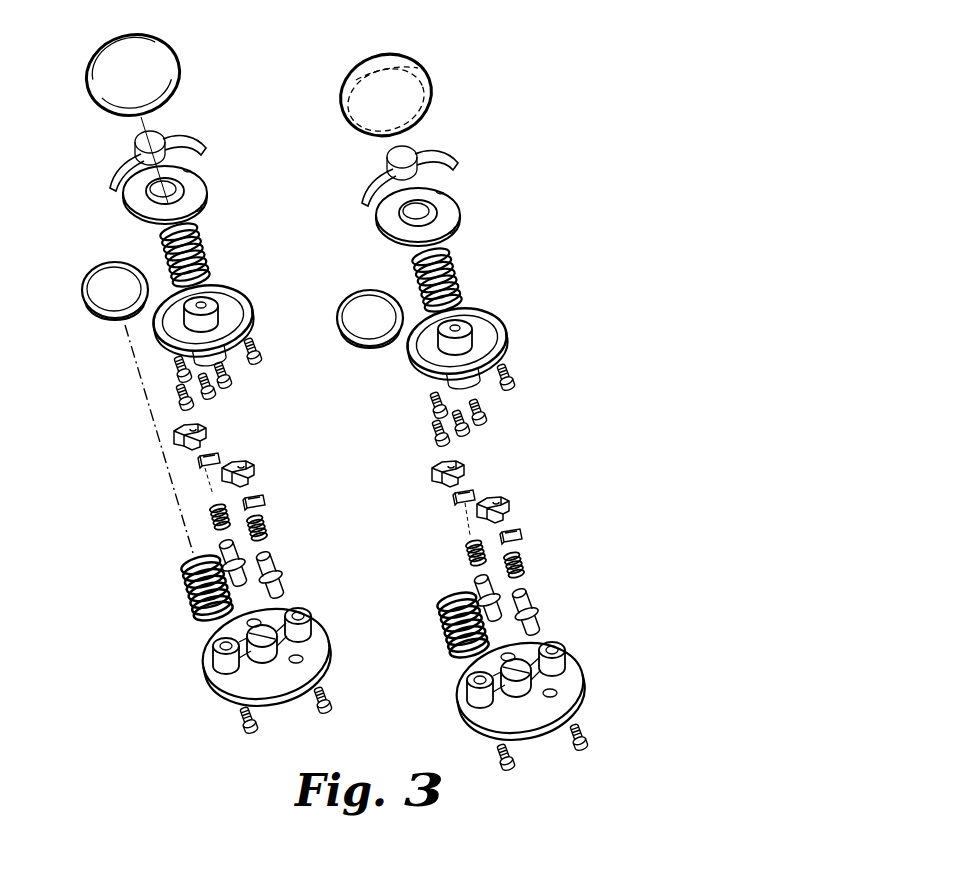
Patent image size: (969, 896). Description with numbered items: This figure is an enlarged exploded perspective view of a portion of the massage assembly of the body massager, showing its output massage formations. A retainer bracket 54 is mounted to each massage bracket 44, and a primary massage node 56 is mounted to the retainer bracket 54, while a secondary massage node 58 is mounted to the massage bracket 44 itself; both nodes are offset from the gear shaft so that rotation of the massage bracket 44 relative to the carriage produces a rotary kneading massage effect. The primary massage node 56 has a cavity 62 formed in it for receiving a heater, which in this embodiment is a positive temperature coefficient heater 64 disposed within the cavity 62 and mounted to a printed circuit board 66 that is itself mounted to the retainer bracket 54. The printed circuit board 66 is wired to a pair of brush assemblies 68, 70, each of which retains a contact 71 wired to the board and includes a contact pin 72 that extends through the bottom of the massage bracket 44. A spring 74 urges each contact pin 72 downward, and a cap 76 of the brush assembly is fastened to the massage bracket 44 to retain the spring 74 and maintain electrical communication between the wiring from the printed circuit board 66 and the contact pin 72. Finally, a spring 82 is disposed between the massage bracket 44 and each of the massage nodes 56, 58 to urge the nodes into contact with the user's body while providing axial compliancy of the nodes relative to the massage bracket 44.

The massage bracket 44 is at (588, 688).
The retainer bracket 54 is at (508, 336).
The primary massage node 56 is at (432, 92).
The secondary massage node 58 is at (365, 292).
The cavity 62 is at (397, 52).
The PTC heater 64 is at (420, 152).
The printed circuit board 66 is at (458, 212).
The brush assembly 68 is at (470, 473).
The brush assembly 70 is at (575, 652).
The contact 71 is at (515, 508).
The contact pin 72 is at (540, 615).
The spring 74 is at (524, 536).
The cap 76 is at (433, 478).
The spring 82 is at (458, 275).